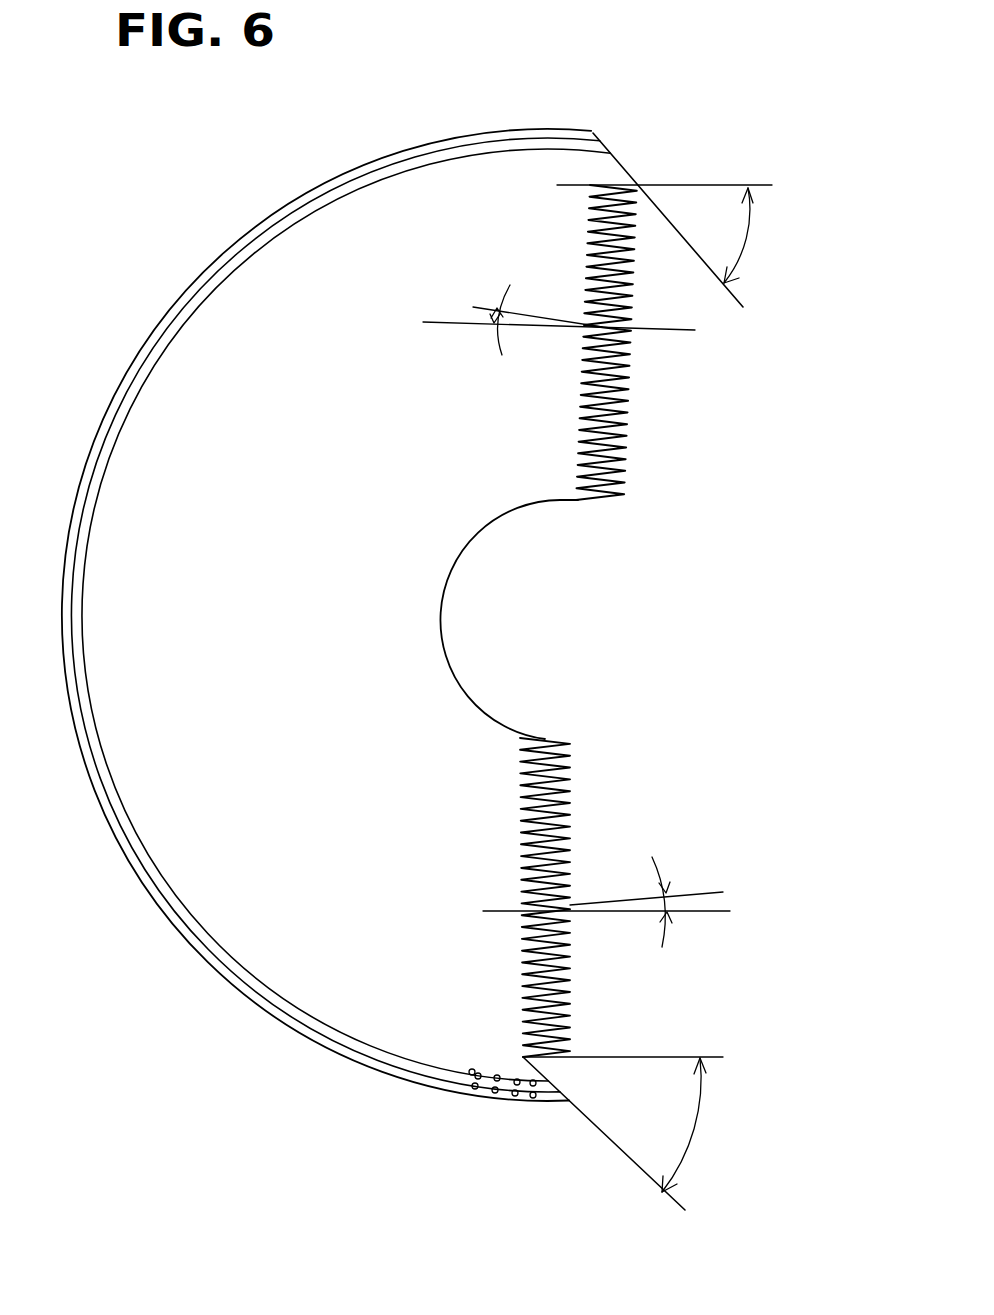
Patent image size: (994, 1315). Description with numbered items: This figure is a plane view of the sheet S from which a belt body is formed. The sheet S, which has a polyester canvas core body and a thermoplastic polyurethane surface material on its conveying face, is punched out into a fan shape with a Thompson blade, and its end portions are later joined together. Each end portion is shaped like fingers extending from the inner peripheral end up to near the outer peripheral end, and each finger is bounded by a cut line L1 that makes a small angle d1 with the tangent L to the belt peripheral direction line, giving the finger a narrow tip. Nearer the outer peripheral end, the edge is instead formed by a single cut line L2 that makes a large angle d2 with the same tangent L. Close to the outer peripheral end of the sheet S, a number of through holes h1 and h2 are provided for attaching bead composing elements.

The sheet S is at (218, 803).
The tangent to the belt peripheral direction line L is at (430, 320).
The cut line of the finger L1 is at (475, 305).
The single cut line L2 is at (735, 305).
The angle between the cut line of the finger and the tangent d1 is at (600, 600).
The angle between the single cut line and the tangent d2 is at (728, 690).
The through holes h1 is at (493, 1092).
The through holes h2 is at (462, 1072).